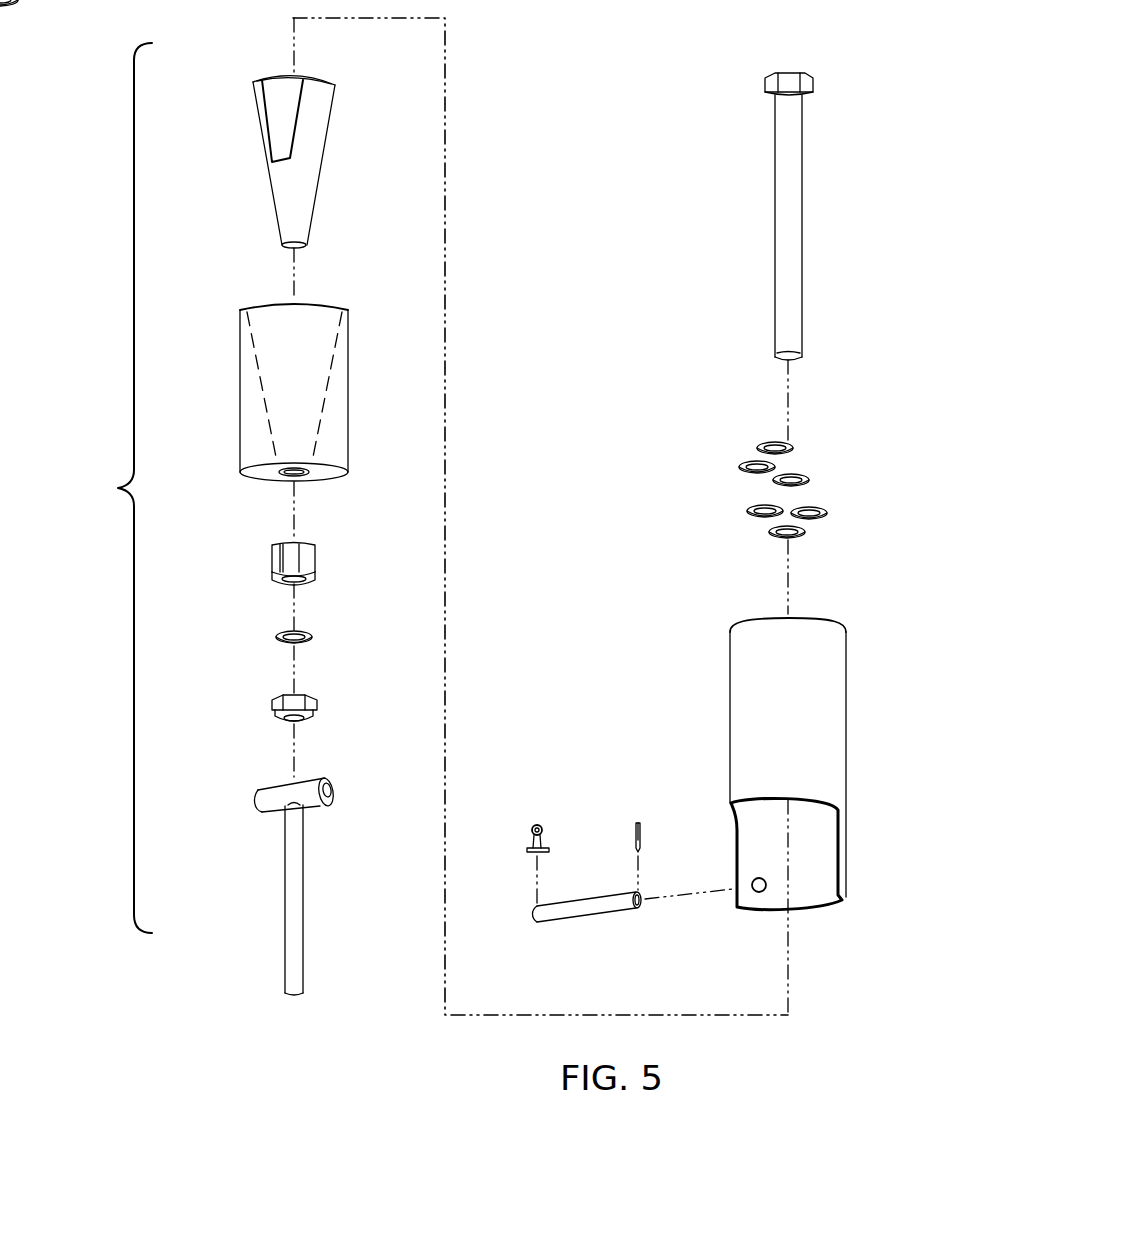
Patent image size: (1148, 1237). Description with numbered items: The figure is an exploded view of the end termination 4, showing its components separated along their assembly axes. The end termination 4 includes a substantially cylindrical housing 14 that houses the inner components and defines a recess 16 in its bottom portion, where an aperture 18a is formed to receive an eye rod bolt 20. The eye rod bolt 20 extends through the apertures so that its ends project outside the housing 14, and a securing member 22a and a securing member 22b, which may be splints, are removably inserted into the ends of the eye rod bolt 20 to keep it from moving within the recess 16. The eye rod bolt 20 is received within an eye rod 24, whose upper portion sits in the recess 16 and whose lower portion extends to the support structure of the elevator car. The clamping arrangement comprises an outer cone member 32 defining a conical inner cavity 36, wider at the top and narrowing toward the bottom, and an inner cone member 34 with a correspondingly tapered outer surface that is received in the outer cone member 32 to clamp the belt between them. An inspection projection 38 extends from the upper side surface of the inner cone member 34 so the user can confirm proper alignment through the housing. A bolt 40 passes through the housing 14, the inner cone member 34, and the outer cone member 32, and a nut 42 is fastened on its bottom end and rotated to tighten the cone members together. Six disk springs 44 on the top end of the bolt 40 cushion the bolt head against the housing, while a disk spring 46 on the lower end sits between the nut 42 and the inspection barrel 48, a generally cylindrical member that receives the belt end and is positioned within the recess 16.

The end termination 4 is at (126, 488).
The housing 14 is at (825, 689).
The recess 16 is at (817, 873).
The aperture 18a is at (766, 891).
The eye rod bolt 20 is at (618, 905).
The securing member 22a is at (532, 853).
The securing member 22b is at (641, 840).
The eye rod 24 is at (297, 880).
The outer cone member 32 is at (337, 369).
The inner cone member 34 is at (322, 97).
The inner cavity 36 is at (308, 392).
The inspection projection 38 is at (277, 105).
The bolt 40 is at (790, 77).
The nut 42 is at (277, 705).
The disk springs 44 is at (775, 469).
The disk spring 46 is at (308, 638).
The inspection barrel 48 is at (270, 556).